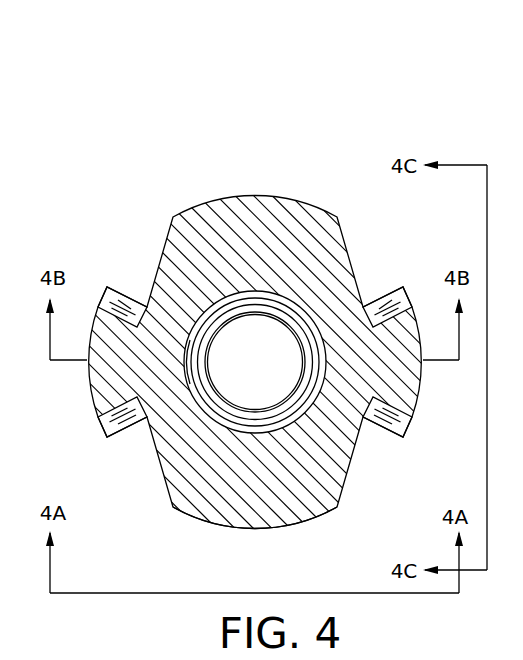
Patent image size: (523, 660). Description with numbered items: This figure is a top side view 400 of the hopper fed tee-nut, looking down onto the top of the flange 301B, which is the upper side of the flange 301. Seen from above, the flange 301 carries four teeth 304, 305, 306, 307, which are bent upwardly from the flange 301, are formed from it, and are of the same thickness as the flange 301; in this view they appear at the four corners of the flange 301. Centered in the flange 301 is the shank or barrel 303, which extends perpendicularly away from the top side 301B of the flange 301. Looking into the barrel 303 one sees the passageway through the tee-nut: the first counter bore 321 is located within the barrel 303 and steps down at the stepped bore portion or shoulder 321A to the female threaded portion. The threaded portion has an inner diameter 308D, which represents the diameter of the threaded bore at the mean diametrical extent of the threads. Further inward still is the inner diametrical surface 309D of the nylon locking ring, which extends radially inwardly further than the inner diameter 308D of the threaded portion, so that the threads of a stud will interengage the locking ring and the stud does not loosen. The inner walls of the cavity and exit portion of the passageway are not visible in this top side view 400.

The top side view 400 is at (363, 65).
The flange 301 is at (215, 523).
The top side of flange 301B is at (290, 487).
The shank or barrel 303 is at (260, 293).
The tooth 304 is at (398, 307).
The tooth 305 is at (380, 423).
The tooth 306 is at (124, 306).
The tooth 307 is at (120, 418).
The inner diameter of threaded portion 308D is at (294, 336).
The inner diametrical surface of locking ring 309D is at (255, 405).
The first counter bore 321 is at (232, 315).
The stepped bore portion or shoulder 321A is at (190, 362).